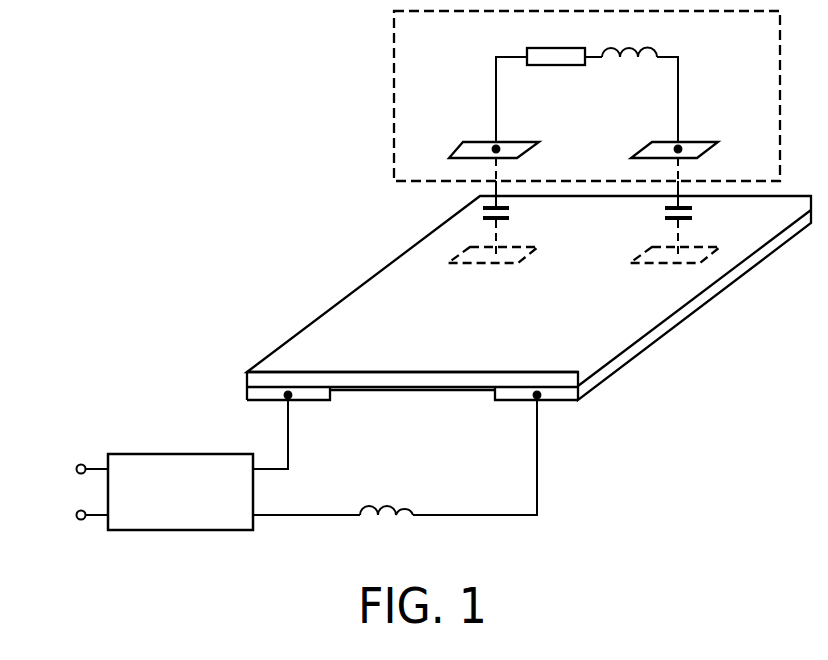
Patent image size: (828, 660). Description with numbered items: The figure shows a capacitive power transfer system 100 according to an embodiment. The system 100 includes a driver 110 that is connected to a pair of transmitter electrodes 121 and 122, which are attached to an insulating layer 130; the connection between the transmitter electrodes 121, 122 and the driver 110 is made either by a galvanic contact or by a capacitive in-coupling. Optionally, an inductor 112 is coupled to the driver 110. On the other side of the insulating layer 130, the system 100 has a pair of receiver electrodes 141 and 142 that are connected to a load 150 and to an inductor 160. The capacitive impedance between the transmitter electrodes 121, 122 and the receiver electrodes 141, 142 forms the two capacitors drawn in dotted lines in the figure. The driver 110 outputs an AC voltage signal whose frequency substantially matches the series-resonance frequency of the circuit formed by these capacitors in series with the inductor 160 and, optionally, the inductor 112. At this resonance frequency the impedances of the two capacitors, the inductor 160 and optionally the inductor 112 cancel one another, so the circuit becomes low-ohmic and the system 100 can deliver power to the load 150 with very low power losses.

The capacitive power transfer system 100 is at (207, 146).
The driver 110 is at (145, 453).
The inductor 112 is at (385, 518).
The transmitter electrode 121 is at (260, 393).
The transmitter electrode 122 is at (567, 393).
The insulating layer 130 is at (678, 305).
The receiver electrode 141 is at (473, 148).
The receiver electrode 142 is at (702, 148).
The load 150 is at (555, 60).
The inductor 160 is at (631, 60).